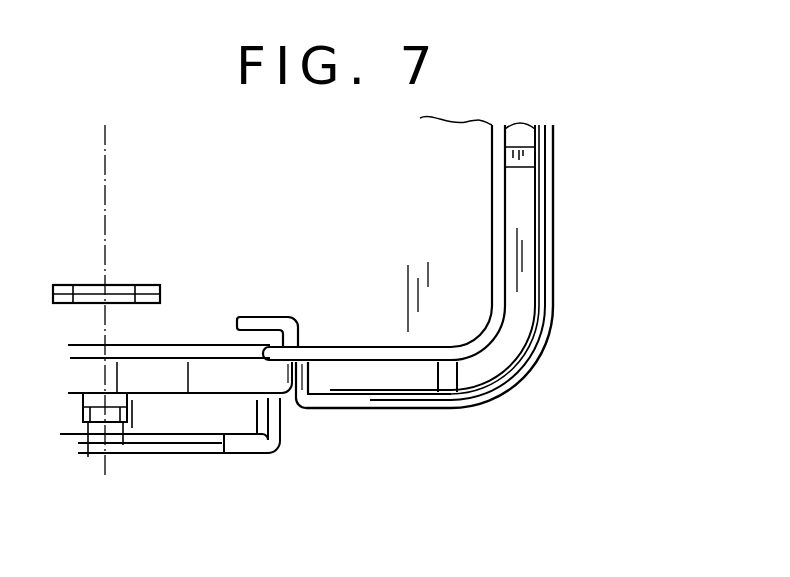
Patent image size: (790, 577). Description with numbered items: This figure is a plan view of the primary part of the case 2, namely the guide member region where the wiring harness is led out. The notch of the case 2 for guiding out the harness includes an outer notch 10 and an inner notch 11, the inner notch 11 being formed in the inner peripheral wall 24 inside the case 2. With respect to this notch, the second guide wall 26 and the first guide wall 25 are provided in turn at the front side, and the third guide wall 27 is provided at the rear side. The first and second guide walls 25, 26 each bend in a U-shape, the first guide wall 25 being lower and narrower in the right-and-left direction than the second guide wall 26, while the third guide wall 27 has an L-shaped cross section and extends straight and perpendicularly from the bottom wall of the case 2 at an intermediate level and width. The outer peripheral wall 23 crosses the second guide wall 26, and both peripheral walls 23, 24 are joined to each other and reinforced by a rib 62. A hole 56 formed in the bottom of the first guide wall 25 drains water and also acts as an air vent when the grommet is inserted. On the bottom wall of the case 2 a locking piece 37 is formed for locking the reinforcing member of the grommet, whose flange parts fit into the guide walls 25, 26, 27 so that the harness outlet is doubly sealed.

The case 2 is at (556, 258).
The outer notch 10 is at (217, 455).
The inner notch 11 is at (258, 349).
The outer peripheral wall 23 is at (543, 356).
The inner peripheral wall 24 is at (493, 266).
The first guide wall 25 is at (283, 428).
The second guide wall 26 is at (312, 374).
The third guide wall 27 is at (265, 316).
The locking piece 37 is at (129, 284).
The hole 56 is at (123, 435).
The rib 62 is at (445, 373).